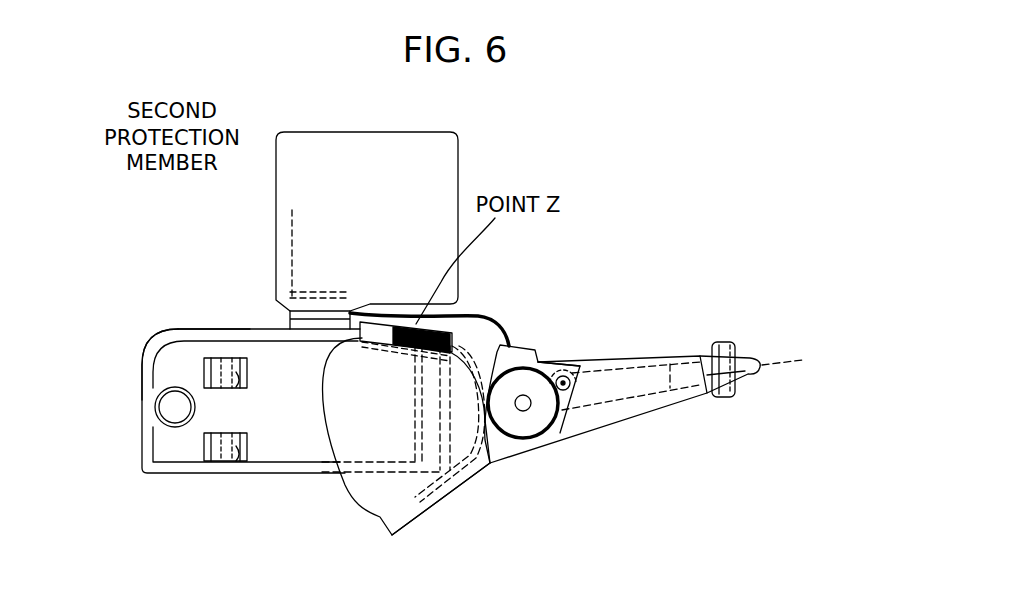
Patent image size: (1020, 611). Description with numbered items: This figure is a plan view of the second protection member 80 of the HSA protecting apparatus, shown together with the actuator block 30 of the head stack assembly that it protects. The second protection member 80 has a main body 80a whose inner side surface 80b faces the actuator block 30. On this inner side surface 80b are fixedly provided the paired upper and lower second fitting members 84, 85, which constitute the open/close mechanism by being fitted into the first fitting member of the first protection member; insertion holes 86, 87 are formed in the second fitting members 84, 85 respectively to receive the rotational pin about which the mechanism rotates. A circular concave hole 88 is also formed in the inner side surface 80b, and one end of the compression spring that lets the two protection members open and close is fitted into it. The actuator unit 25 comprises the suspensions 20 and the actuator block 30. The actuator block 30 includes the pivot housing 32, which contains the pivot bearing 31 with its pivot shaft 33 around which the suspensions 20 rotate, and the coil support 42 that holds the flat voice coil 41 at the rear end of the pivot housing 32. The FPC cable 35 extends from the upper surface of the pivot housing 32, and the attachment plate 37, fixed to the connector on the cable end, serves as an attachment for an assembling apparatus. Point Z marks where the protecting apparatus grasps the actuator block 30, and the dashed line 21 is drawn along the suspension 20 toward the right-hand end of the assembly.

The suspension 20 is at (736, 344).
The axis of pin 21 is at (797, 362).
The actuator unit 25 is at (628, 408).
The actuator block 30 is at (659, 392).
The pivot bearing 31 is at (529, 409).
The pivot housing 32 is at (526, 345).
The pivot shaft 33 is at (524, 406).
The FPC cable 35 is at (480, 312).
The attachment plate 37 is at (447, 161).
The voice coil 41 is at (406, 441).
The coil support 42 is at (430, 505).
The second protection member 80 is at (215, 351).
The main body 80a is at (165, 336).
The inner side surface 80b is at (170, 364).
The second fitting member 84 is at (246, 354).
The second fitting member 85 is at (238, 481).
The insertion hole 86 is at (244, 384).
The insertion hole 87 is at (241, 458).
The circular concave hole 88 is at (178, 414).